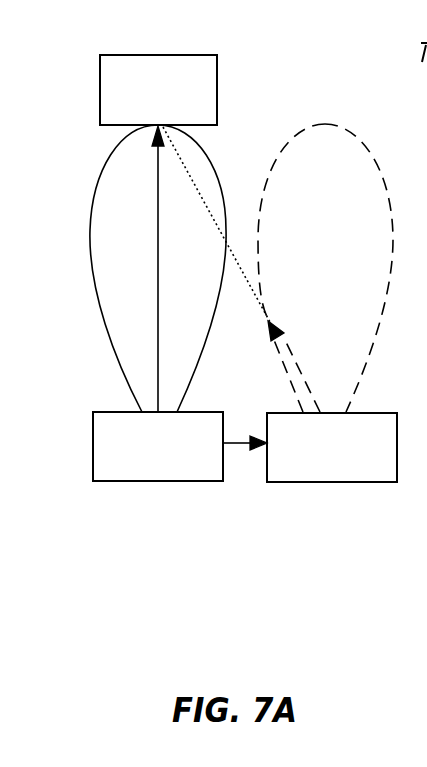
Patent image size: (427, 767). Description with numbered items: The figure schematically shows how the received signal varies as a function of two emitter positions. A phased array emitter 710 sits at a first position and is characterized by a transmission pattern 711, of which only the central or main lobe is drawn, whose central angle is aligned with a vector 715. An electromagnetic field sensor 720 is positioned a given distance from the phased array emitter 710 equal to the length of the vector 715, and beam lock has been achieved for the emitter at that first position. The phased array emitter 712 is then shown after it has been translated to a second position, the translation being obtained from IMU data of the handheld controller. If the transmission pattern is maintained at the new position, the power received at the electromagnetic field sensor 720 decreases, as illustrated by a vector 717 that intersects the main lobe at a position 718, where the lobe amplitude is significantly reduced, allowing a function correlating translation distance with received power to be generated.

The electromagnetic field sensor 720 is at (155, 55).
The phased array emitter 710 is at (150, 482).
The phased array emitter 712 is at (327, 482).
The transmission pattern 711 is at (98, 292).
The vector 715 is at (157, 278).
The vector 717 is at (305, 384).
The position 718 is at (266, 333).